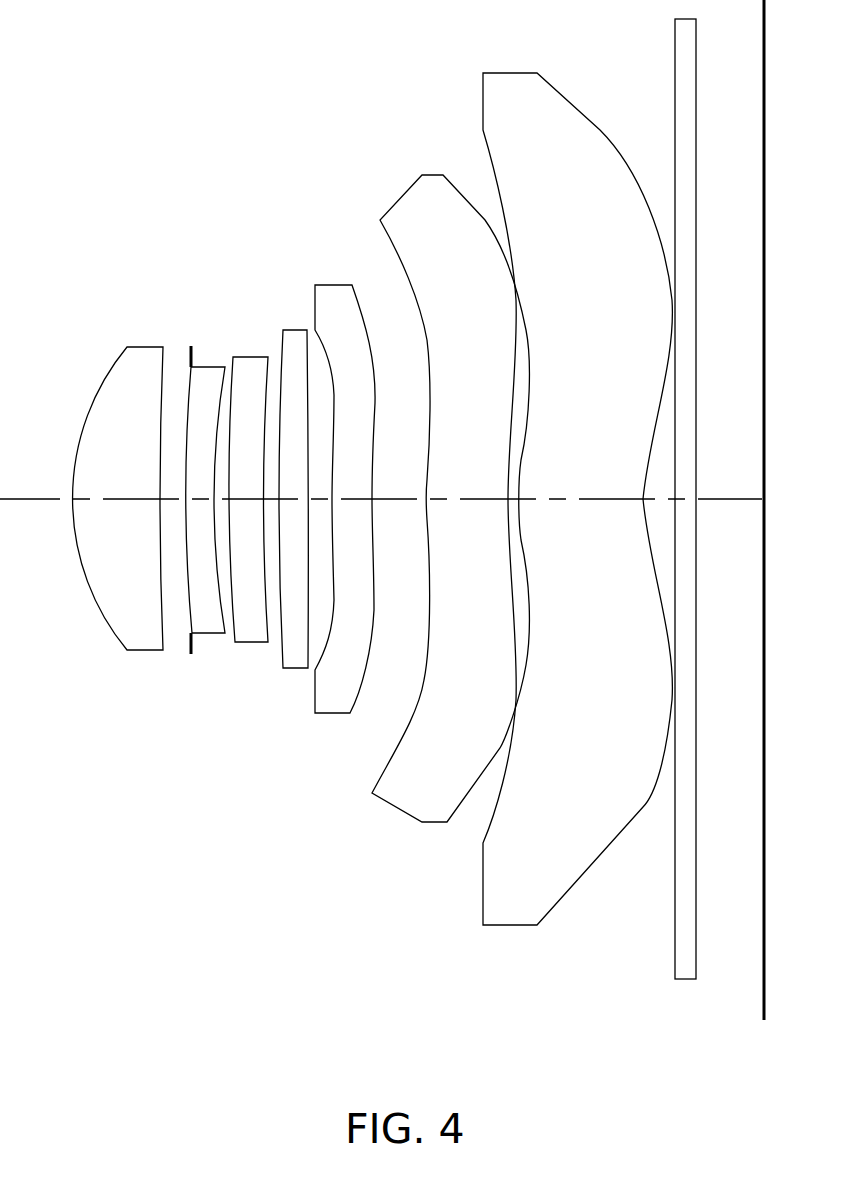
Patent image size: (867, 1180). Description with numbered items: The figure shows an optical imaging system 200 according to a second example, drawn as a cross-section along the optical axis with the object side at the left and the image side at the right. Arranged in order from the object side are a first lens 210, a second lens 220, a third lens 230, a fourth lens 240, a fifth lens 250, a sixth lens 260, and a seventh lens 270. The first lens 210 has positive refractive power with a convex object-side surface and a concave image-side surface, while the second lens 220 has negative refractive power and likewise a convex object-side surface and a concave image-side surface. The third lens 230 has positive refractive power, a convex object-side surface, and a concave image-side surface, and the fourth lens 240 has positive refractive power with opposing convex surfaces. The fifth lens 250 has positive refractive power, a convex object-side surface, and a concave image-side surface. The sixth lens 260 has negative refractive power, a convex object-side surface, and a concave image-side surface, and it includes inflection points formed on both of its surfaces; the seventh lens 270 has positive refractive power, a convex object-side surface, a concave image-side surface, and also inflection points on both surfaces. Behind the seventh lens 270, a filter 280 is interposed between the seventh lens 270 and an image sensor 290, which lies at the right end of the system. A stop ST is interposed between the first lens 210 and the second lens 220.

The optical imaging system 200 is at (229, 137).
The first lens 210 is at (130, 642).
The second lens 220 is at (212, 632).
The third lens 230 is at (242, 640).
The fourth lens 240 is at (290, 659).
The fifth lens 250 is at (332, 708).
The sixth lens 260 is at (397, 808).
The seventh lens 270 is at (505, 922).
The filter 280 is at (686, 980).
The image sensor 290 is at (763, 1002).
The stop ST is at (190, 345).